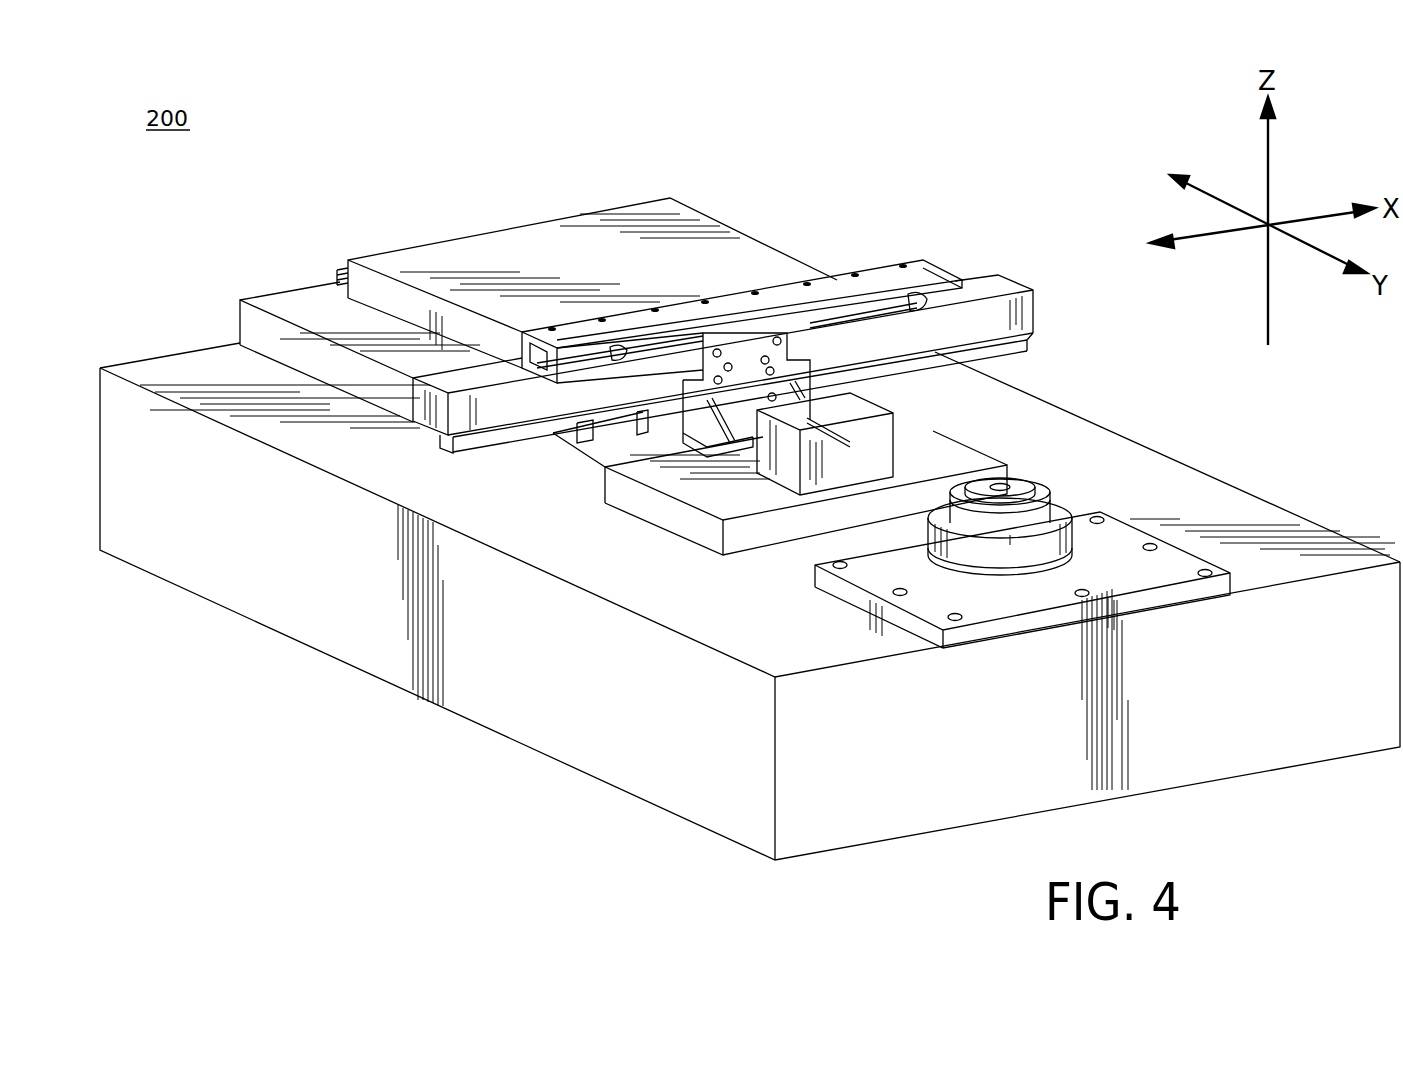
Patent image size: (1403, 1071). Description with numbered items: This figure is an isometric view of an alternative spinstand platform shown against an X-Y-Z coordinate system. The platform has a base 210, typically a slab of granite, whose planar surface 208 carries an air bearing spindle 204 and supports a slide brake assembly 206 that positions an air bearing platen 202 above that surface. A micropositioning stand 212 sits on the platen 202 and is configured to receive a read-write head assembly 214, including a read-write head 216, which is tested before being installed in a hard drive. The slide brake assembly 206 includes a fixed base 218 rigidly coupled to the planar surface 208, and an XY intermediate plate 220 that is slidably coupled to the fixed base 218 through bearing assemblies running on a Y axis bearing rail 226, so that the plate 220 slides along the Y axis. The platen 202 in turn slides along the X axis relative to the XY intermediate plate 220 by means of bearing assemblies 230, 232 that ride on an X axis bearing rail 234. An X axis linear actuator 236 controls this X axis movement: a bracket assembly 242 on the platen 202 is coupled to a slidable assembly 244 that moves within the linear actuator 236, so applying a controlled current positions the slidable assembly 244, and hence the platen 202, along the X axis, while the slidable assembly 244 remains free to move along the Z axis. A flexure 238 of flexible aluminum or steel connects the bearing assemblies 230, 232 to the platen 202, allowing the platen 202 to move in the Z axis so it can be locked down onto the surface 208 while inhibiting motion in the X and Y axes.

The air bearing platen 202 is at (696, 485).
The air bearing spindle 204 is at (1033, 489).
The slide brake assembly 206 is at (700, 150).
The planar surface 208 is at (787, 658).
The base 210 is at (494, 687).
The micropositioning stand 212 is at (780, 467).
The read-write head assembly 214 is at (880, 440).
The read-write head 216 is at (853, 440).
The fixed base 218 is at (285, 301).
The XY intermediate plate 220 is at (556, 258).
The Y axis bearing rail 226 is at (338, 269).
The bearing assembly 230 is at (603, 418).
The bearing assembly 232 is at (832, 348).
The X axis bearing rail 234 is at (936, 372).
The X axis linear actuator 236 is at (823, 290).
The flexure 238 is at (625, 450).
The bracket assembly 242 is at (747, 353).
The slidable assembly 244 is at (667, 340).